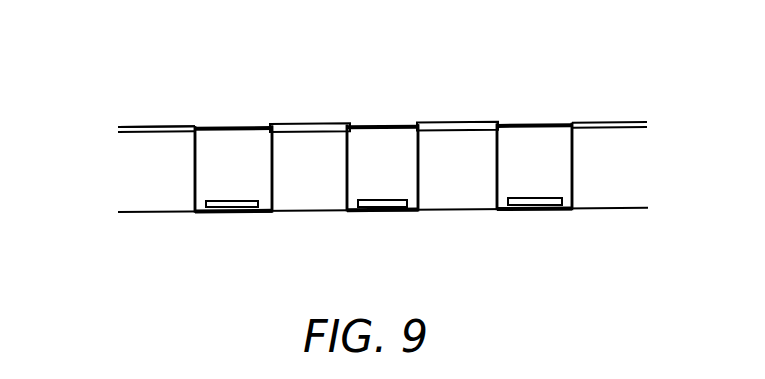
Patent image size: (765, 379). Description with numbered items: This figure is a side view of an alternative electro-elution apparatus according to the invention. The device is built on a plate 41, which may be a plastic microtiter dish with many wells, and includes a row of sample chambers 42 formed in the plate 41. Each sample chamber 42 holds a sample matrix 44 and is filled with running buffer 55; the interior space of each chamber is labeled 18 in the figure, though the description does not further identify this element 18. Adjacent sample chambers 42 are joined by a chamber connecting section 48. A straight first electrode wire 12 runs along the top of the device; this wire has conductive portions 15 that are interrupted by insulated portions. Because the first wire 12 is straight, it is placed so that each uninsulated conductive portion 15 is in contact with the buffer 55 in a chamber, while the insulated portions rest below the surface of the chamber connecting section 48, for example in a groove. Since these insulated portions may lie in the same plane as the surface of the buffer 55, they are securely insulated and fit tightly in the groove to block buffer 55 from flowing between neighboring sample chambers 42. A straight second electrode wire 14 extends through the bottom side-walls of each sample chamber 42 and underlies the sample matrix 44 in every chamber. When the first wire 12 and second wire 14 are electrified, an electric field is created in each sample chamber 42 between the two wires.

The first electrode wire 12 is at (140, 134).
The second electrode wire 14 is at (637, 208).
The plate 41 is at (128, 126).
The conductive portions 15 is at (243, 126).
The running buffer 55 is at (218, 137).
The chamber connecting section 48 is at (298, 124).
The well cavity 18 is at (196, 165).
The sample chambers 42 is at (213, 213).
The sample matrices 44 is at (232, 207).